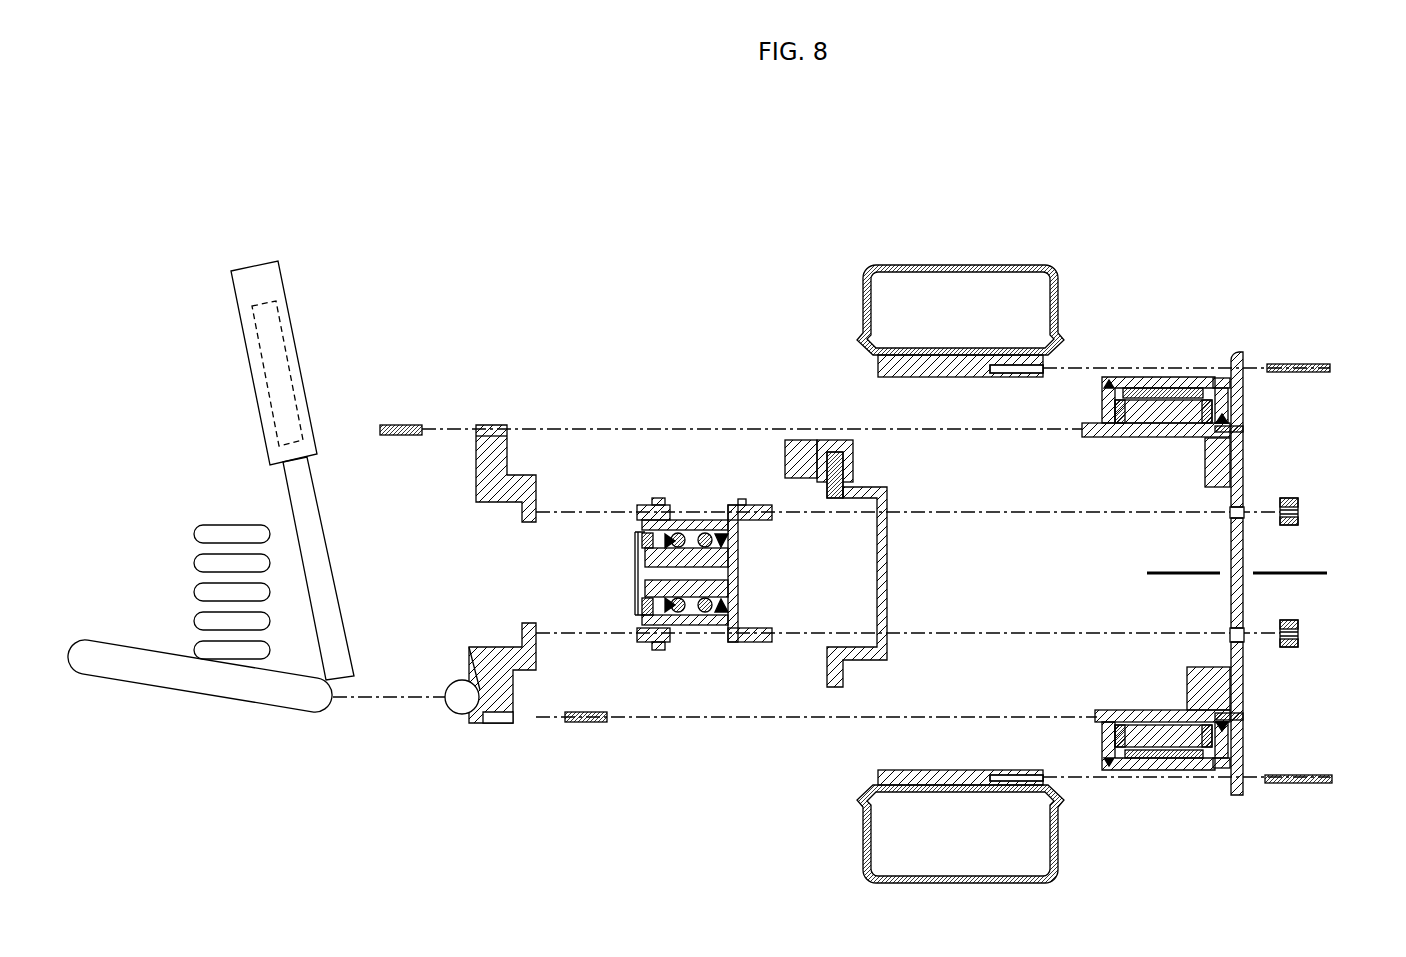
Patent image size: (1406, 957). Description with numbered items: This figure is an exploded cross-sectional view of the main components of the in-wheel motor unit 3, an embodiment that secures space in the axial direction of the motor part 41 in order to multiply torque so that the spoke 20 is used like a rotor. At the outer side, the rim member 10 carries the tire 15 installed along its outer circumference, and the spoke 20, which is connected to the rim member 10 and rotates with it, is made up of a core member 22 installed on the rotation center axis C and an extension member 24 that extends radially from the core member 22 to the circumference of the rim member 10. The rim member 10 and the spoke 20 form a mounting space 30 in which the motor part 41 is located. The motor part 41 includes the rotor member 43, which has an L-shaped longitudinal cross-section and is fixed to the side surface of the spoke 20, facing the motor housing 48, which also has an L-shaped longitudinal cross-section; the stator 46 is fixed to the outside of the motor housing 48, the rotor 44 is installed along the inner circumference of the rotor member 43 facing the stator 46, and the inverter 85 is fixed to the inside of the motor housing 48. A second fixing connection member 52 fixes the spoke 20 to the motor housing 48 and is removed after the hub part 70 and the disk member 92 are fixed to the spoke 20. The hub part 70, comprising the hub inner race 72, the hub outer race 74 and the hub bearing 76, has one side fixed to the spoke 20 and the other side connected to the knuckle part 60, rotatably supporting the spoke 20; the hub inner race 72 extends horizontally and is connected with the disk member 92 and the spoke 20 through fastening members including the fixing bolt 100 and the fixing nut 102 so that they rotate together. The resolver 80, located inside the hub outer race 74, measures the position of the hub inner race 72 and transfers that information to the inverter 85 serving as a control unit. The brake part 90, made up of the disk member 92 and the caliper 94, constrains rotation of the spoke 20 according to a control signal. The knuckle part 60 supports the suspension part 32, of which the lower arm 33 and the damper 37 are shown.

The in-wheel motor unit 3 is at (1244, 455).
The rim member 10 is at (945, 362).
The tire 15 is at (960, 262).
The spoke 20 is at (1348, 487).
The core member 22 is at (1243, 540).
The extension member 24 is at (1240, 470).
The mounting space 30 is at (1150, 686).
The suspension part 32 is at (182, 714).
The lower arm 33 is at (112, 668).
The damper 37 is at (213, 356).
The motor part 41 is at (1156, 377).
The rotor member 43 is at (1192, 380).
The rotor 44 is at (1133, 372).
The stator 46 is at (1140, 437).
The motor housing 48 is at (1180, 437).
The second fixing connection member 52 is at (1245, 428).
The knuckle part 60 is at (475, 725).
The hub part 70 is at (726, 563).
The hub inner race 72 is at (725, 555).
The hub outer race 74 is at (700, 625).
The hub bearing 76 is at (725, 600).
The resolver 80 is at (636, 605).
The inverter 85 is at (1222, 693).
The brake part 90 is at (833, 495).
The disk member 92 is at (870, 487).
The caliper 94 is at (827, 447).
The fixing bolt 100 is at (740, 505).
The fixing nut 102 is at (1300, 634).
The rotation center axis C is at (1310, 575).